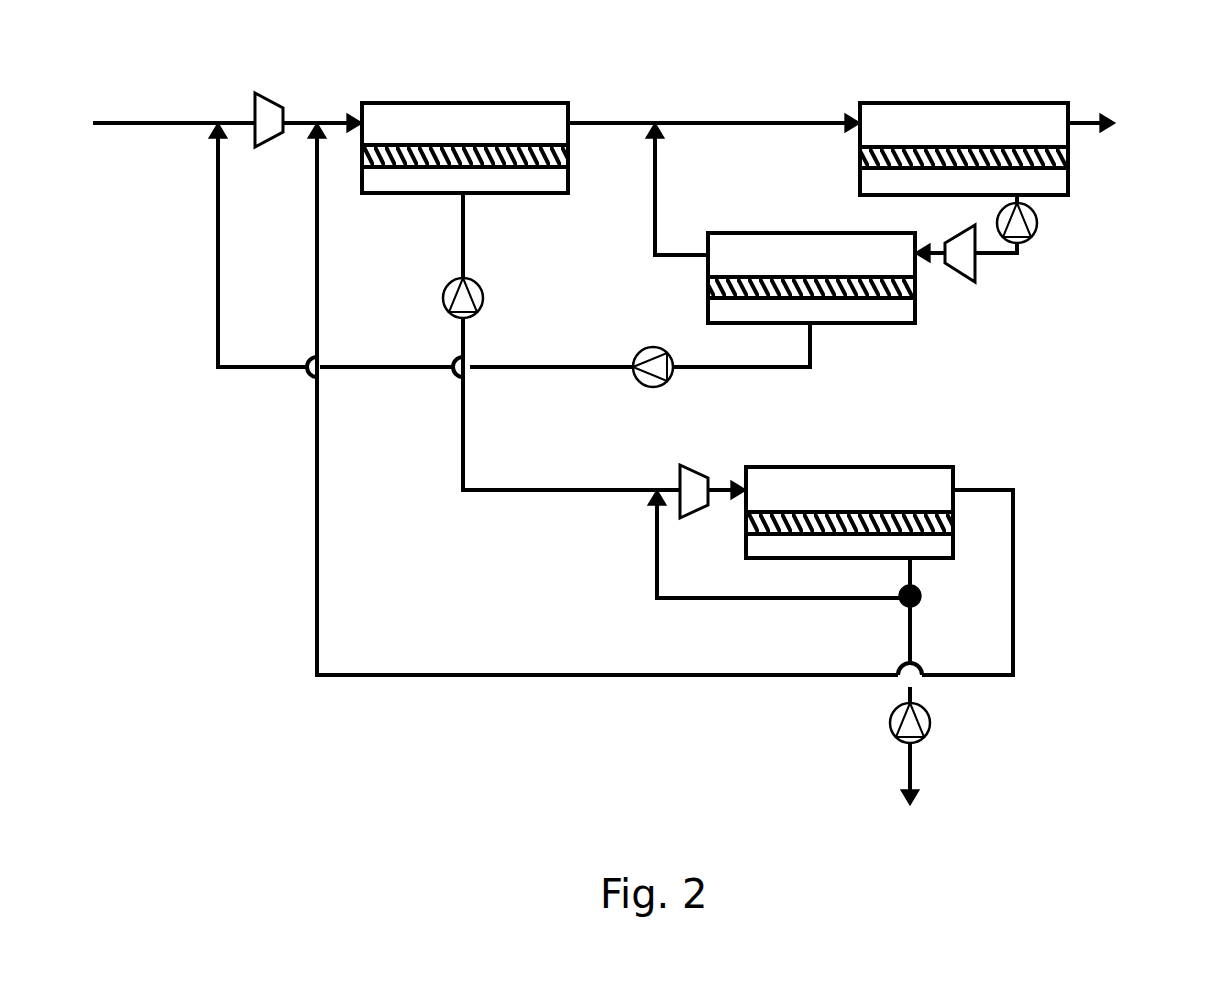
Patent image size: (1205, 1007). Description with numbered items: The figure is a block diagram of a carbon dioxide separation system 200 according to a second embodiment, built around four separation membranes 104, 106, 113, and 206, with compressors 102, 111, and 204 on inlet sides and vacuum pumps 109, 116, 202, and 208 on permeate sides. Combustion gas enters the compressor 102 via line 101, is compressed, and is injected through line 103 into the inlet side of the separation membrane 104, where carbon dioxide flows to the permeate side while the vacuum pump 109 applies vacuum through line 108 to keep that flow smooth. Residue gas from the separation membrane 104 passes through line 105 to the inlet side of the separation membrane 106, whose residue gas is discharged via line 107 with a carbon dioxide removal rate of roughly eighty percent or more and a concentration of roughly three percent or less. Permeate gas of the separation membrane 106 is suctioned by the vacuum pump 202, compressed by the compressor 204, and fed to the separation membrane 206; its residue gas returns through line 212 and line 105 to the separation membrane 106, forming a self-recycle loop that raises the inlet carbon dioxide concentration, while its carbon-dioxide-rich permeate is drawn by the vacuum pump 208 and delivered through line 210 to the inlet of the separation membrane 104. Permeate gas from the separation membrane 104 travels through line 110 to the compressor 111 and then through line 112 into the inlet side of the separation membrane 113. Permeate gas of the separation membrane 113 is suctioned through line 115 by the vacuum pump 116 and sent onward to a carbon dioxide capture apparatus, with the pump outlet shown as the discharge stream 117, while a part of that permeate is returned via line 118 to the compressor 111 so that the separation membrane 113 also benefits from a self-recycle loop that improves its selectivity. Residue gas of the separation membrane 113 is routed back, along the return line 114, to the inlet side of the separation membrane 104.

The line 101 is at (113, 118).
The compressor 102 is at (262, 93).
The line 103 is at (320, 118).
The separation membrane 104 is at (505, 102).
The line 105 is at (693, 119).
The separation membrane 106 is at (912, 102).
The line 107 is at (1085, 112).
The line 108 is at (470, 233).
The vacuum pump 109 is at (487, 297).
The line 110 is at (492, 488).
The compressor 111 is at (681, 464).
The line 112 is at (717, 487).
The separation membrane 113 is at (863, 465).
The third retentate recycle stream 114 is at (600, 680).
The line 115 is at (902, 628).
The vacuum pump 116 is at (938, 720).
The permeate product stream 117 is at (918, 775).
The line 118 is at (653, 598).
The carbon dioxide separation system 200 is at (162, 454).
The vacuum pump 202 is at (1040, 223).
The compressor 204 is at (982, 282).
The separation membrane 206 is at (900, 332).
The vacuum pump 208 is at (635, 347).
The line 210 is at (210, 292).
The line 212 is at (663, 178).